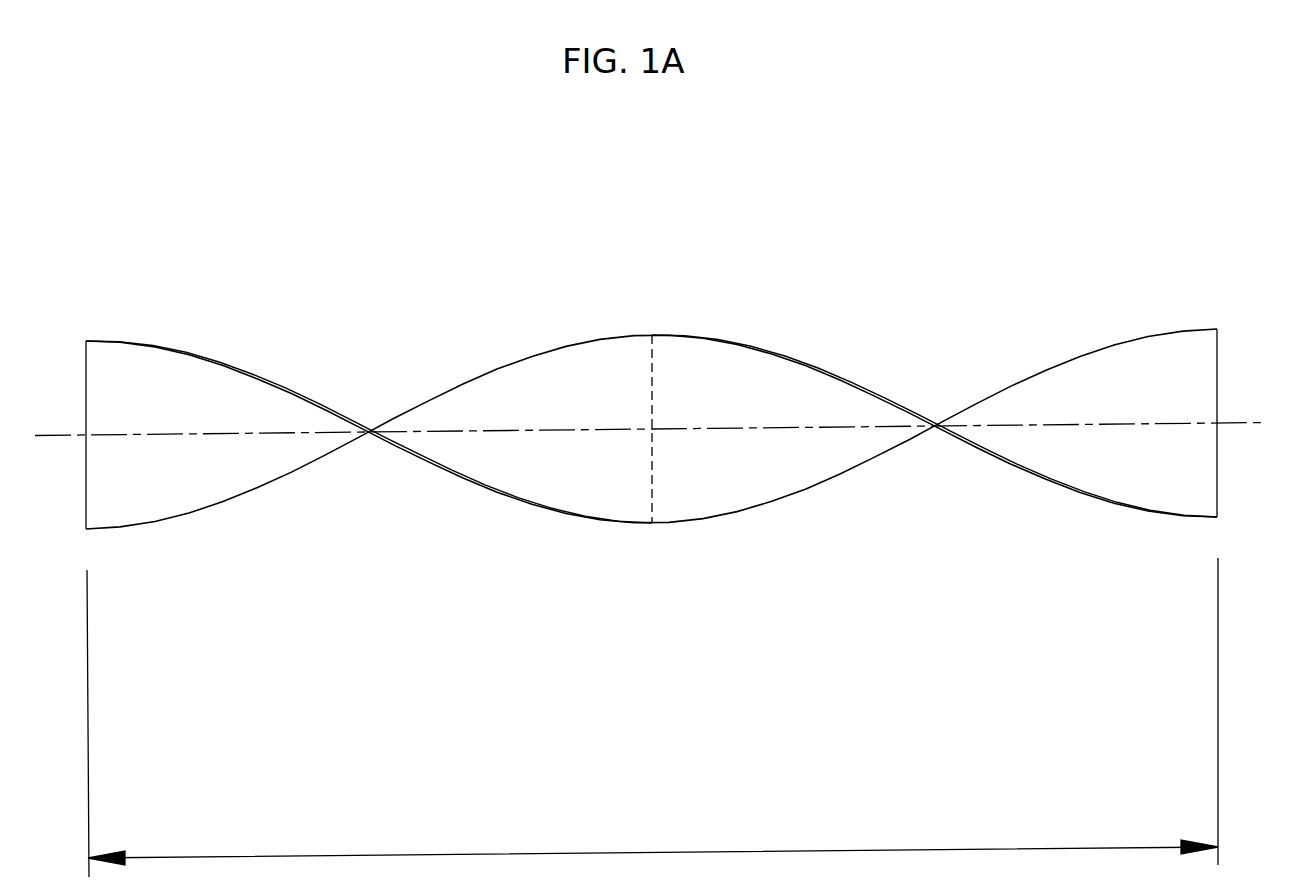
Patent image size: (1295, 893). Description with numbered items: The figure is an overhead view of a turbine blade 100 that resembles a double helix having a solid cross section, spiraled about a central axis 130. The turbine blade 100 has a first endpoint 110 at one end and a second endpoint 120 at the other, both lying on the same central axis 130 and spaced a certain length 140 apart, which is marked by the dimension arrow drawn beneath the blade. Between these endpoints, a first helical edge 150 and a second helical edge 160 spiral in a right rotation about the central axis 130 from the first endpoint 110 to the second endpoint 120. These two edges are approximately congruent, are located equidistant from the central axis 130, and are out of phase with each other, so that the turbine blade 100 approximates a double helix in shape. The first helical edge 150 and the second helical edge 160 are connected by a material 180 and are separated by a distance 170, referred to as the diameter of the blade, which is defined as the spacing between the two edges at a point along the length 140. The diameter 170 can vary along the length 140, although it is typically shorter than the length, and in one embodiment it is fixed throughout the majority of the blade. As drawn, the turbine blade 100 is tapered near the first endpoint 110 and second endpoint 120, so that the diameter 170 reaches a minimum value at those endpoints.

The turbine blade 100 is at (853, 214).
The first endpoint 110 is at (86, 435).
The second endpoint 120 is at (1218, 423).
The central axis 130 is at (617, 433).
The length 140 is at (855, 850).
The first helical edge 150 is at (465, 381).
The second helical edge 160 is at (455, 481).
The diameter 170 is at (652, 388).
The material 180 is at (601, 368).